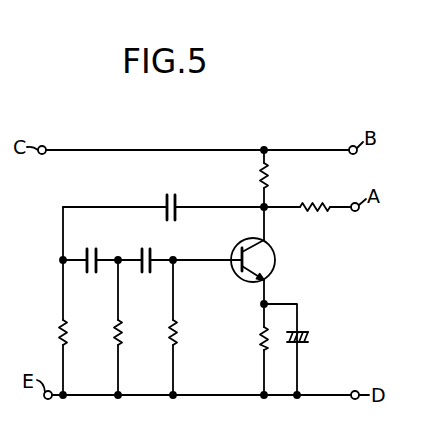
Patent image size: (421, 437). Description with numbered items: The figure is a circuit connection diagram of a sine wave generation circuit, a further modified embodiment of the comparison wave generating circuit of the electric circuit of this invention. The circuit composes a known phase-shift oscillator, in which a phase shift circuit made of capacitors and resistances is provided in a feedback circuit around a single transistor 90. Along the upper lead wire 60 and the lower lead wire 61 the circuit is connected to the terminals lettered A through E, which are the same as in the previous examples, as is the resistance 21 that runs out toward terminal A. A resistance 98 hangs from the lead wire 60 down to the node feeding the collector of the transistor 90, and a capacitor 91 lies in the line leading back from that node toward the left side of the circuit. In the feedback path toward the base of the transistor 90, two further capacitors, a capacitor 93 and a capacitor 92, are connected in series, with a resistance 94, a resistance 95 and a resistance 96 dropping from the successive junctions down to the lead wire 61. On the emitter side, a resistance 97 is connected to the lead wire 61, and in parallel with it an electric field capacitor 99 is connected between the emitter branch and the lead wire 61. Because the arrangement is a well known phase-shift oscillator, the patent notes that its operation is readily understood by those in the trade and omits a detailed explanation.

The lead wire 60 is at (293, 131).
The lead wire 61 is at (338, 395).
The resistance 21 is at (320, 207).
The resistance 98 is at (268, 172).
The transistor 90 is at (270, 245).
The capacitor 91 is at (178, 196).
The capacitor 92 is at (140, 249).
The capacitor 93 is at (97, 249).
The resistance 94 is at (67, 334).
The resistance 95 is at (122, 334).
The resistance 96 is at (177, 334).
The resistance 97 is at (261, 344).
The electric field capacitor 99 is at (305, 343).